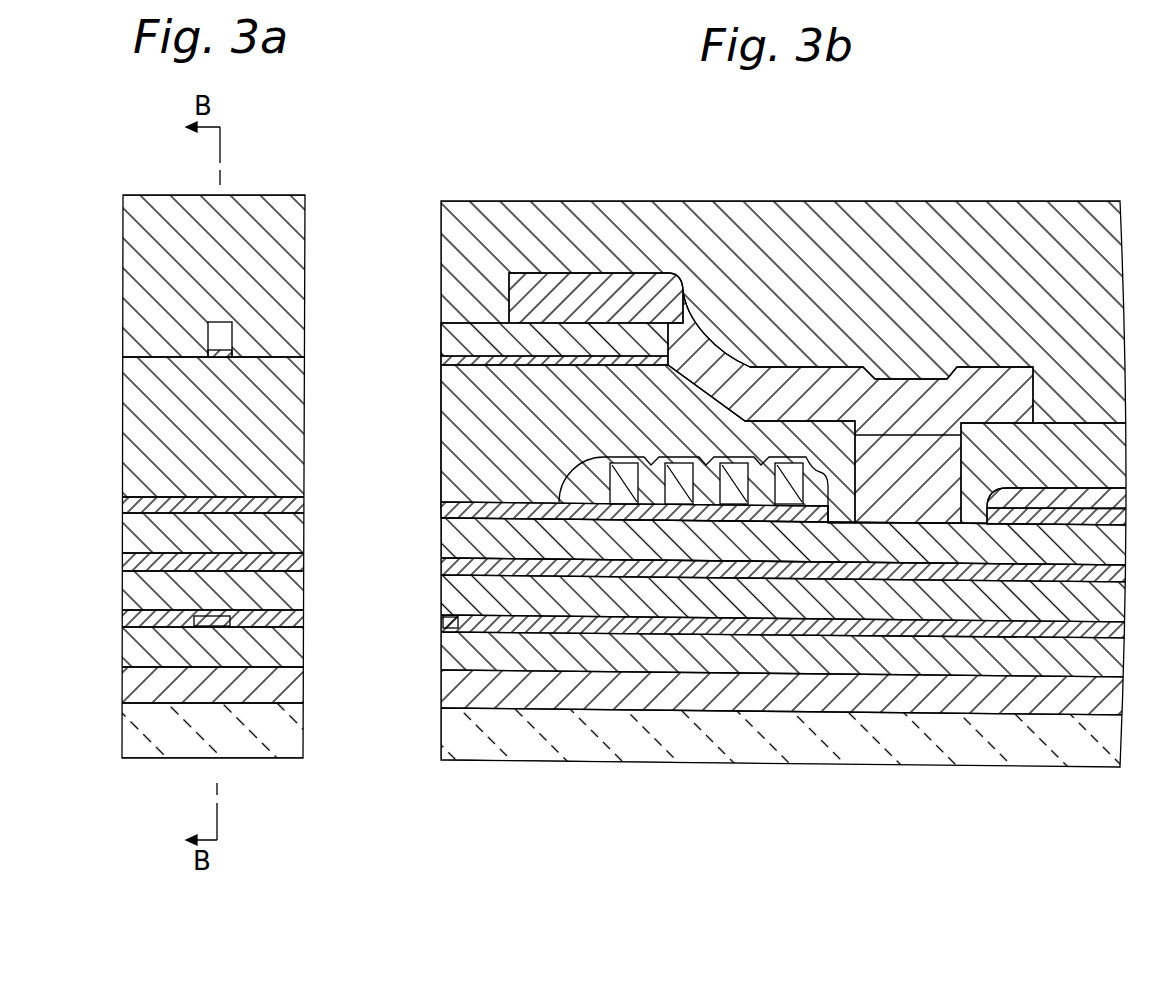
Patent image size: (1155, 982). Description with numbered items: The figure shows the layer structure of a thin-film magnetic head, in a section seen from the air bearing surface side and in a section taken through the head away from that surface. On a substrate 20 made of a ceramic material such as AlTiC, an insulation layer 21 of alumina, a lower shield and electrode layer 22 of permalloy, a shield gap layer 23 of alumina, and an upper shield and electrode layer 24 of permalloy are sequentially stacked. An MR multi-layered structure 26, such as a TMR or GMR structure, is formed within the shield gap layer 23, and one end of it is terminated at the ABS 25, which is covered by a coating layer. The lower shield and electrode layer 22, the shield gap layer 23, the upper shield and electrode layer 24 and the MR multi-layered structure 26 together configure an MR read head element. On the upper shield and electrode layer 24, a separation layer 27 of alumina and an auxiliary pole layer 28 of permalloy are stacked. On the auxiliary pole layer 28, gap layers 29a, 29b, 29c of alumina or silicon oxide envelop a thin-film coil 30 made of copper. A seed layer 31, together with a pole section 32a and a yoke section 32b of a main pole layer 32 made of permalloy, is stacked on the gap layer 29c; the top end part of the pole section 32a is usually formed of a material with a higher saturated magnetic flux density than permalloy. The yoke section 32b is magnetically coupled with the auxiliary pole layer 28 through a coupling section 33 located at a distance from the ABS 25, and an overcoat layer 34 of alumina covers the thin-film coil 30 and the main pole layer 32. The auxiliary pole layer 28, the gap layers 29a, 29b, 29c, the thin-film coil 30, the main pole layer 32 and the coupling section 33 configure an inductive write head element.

In FIG. 3A, the substrate 20 is at (133, 755).
In FIG. 3B, the substrate 20 is at (1098, 757).
In FIG. 3A, the insulation layer 21 is at (148, 693).
In FIG. 3B, the insulation layer 21 is at (1020, 697).
In FIG. 3A, the lower shield and electrode layer 22 is at (168, 643).
In FIG. 3B, the lower shield and electrode layer 22 is at (968, 657).
In FIG. 3A, the shield gap layer 23 is at (183, 620).
In FIG. 3B, the shield gap layer 23 is at (915, 635).
In FIG. 3A, the upper shield and electrode layer 24 is at (238, 598).
In FIG. 3B, the upper shield and electrode layer 24 is at (862, 605).
In FIG. 3B, the ABS 25 is at (441, 400).
In FIG. 3A, the MR multi-layered structure 26 is at (212, 627).
In FIG. 3B, the MR multi-layered structure 26 is at (445, 634).
In FIG. 3A, the separation layer 27 is at (257, 567).
In FIG. 3B, the separation layer 27 is at (807, 572).
In FIG. 3A, the auxiliary pole layer 28 is at (278, 543).
In FIG. 3B, the auxiliary pole layer 28 is at (747, 553).
In FIG. 3A, the gap layer 29a is at (148, 497).
In FIG. 3B, the gap layer 29a is at (650, 512).
In FIG. 3B, the gap layer 29b is at (588, 492).
In FIG. 3A, the gap layer 29c is at (178, 372).
In FIG. 3B, the gap layer 29c is at (520, 478).
In FIG. 3B, the thin-film coil 30 is at (677, 495).
In FIG. 3A, the seed layer 31 is at (233, 357).
In FIG. 3B, the seed layer 31 is at (618, 356).
In FIG. 3B, the main pole layer 32 is at (562, 225).
In FIG. 3A, the pole section 32a is at (222, 335).
In FIG. 3B, the pole section 32a is at (485, 333).
In FIG. 3B, the yoke section 32b is at (573, 295).
In FIG. 3B, the coupling section 33 is at (908, 460).
In FIG. 3A, the overcoat layer 34 is at (262, 212).
In FIG. 3B, the overcoat layer 34 is at (1058, 235).